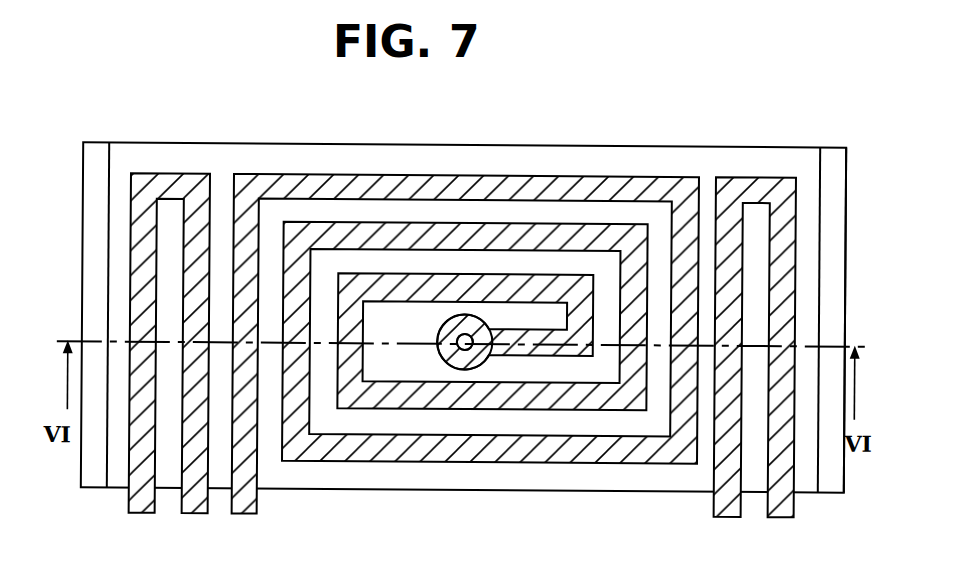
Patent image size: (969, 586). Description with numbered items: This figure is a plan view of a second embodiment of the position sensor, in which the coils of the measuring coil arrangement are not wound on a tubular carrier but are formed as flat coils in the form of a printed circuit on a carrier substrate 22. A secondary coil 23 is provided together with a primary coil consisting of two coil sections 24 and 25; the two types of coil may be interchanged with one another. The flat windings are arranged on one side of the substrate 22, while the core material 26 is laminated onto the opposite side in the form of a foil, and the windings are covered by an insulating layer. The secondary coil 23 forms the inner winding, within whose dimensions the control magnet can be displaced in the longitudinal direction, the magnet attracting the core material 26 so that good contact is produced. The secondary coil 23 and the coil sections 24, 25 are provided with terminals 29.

The carrier substrate 22 is at (638, 161).
The secondary coil 23 is at (343, 182).
The primary coil section 24 is at (158, 184).
The primary coil section 25 is at (760, 185).
The core material 26 is at (829, 171).
The terminals 29 is at (450, 333).